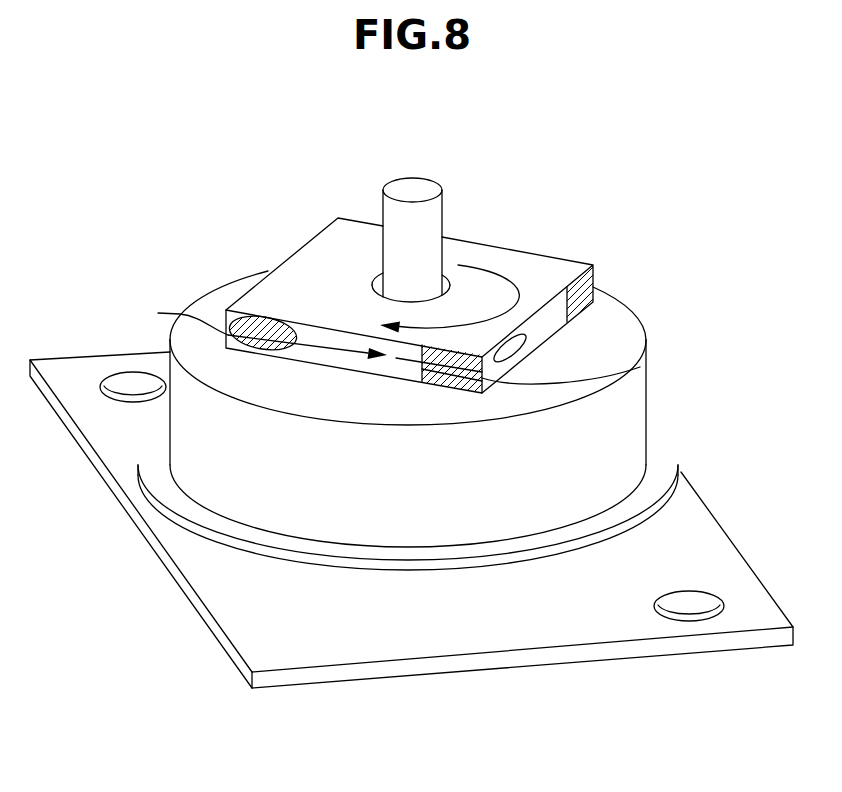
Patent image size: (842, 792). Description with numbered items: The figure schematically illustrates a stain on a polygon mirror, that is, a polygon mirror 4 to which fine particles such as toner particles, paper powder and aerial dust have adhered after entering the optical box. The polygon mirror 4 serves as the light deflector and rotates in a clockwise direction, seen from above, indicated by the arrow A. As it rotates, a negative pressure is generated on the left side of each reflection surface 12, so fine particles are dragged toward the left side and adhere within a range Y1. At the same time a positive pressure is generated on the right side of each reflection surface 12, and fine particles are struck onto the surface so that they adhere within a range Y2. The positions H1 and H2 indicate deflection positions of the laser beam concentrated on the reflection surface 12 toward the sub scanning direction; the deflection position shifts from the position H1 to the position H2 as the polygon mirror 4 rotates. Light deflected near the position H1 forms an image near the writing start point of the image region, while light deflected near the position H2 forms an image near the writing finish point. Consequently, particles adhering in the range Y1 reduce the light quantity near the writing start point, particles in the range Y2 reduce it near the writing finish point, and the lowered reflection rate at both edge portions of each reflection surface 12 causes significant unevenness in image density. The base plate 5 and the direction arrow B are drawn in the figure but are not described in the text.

The polygon mirror 4 is at (359, 232).
The reflection surface 12 is at (551, 292).
The base plate 5 is at (172, 566).
The deflection position H1 is at (265, 319).
The deflection position H2 is at (398, 359).
The arrow A is at (490, 270).
The sliding direction of plate B is at (333, 345).
The range Y1 is at (176, 317).
The range Y2 is at (640, 367).